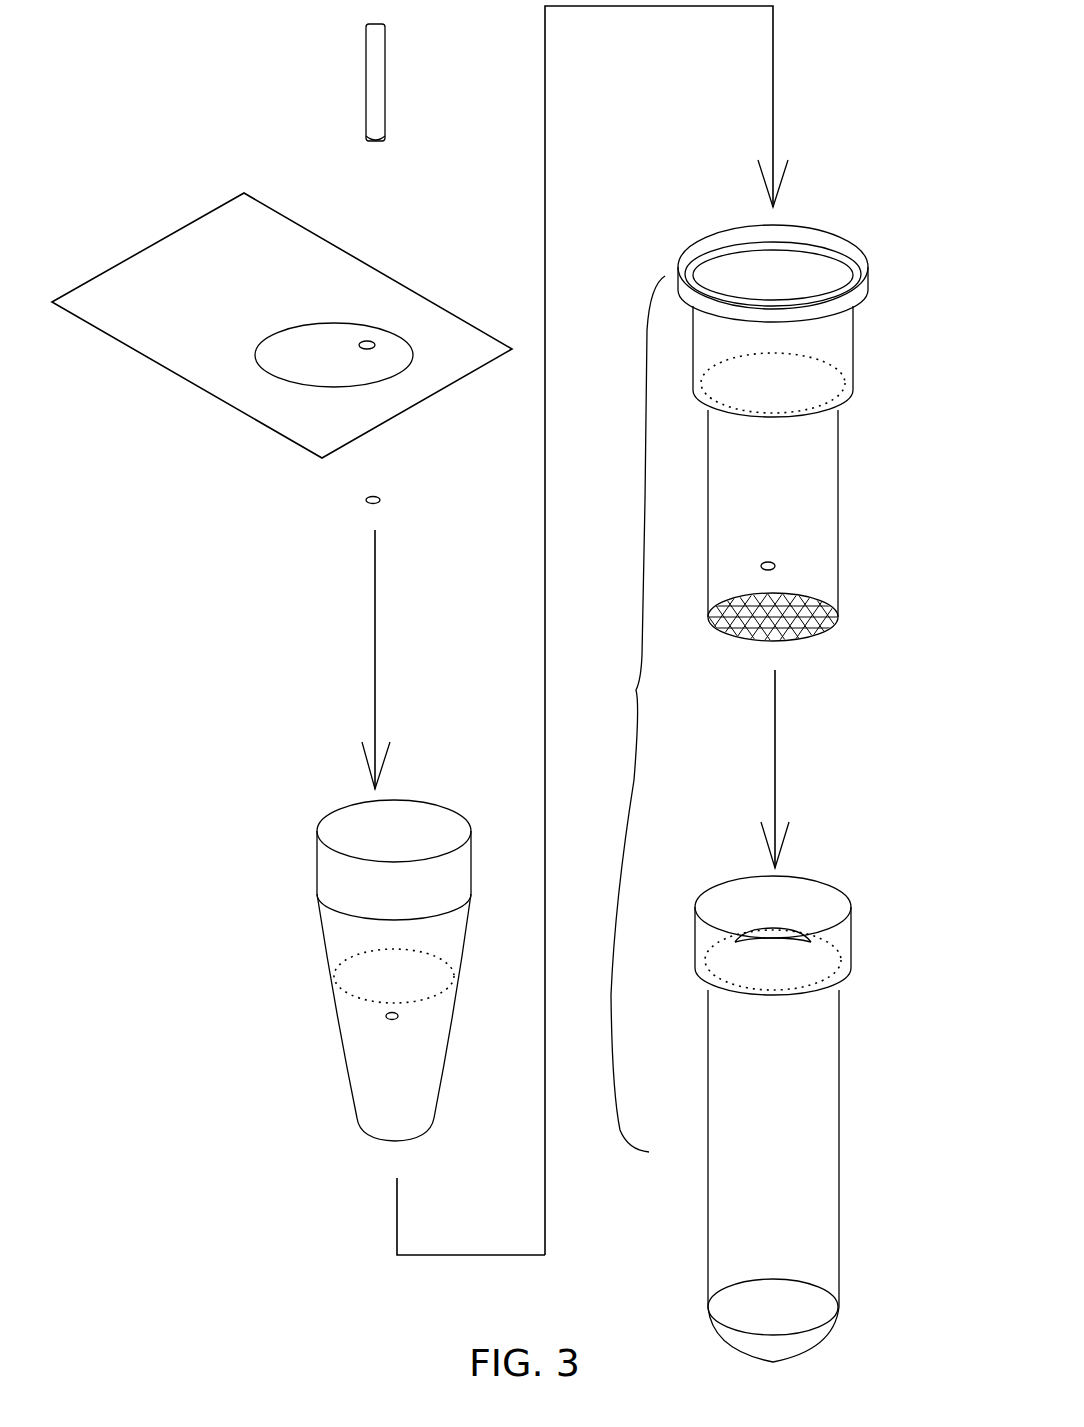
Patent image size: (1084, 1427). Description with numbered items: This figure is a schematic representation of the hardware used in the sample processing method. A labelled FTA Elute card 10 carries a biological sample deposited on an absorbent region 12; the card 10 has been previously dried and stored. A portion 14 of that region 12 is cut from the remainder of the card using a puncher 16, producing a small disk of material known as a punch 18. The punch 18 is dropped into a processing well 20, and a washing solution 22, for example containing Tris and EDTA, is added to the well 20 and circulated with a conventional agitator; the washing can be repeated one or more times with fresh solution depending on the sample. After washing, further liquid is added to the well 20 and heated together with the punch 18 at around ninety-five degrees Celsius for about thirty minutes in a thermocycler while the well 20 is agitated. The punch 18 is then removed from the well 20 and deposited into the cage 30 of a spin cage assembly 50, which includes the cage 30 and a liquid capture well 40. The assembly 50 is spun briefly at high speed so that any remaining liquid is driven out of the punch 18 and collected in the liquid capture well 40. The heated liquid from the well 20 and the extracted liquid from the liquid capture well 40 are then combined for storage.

The labelled FTA Elute card 10 is at (128, 214).
The absorbent region 12 is at (260, 363).
The portion of the region 14 is at (375, 343).
The puncher 16 is at (371, 52).
The punch 18 is at (367, 500).
The processing well 20 is at (322, 864).
The washing solution 22 is at (372, 1041).
The cage 30 is at (852, 325).
The liquid capture well 40 is at (853, 936).
The spin cage assembly 50 is at (640, 690).